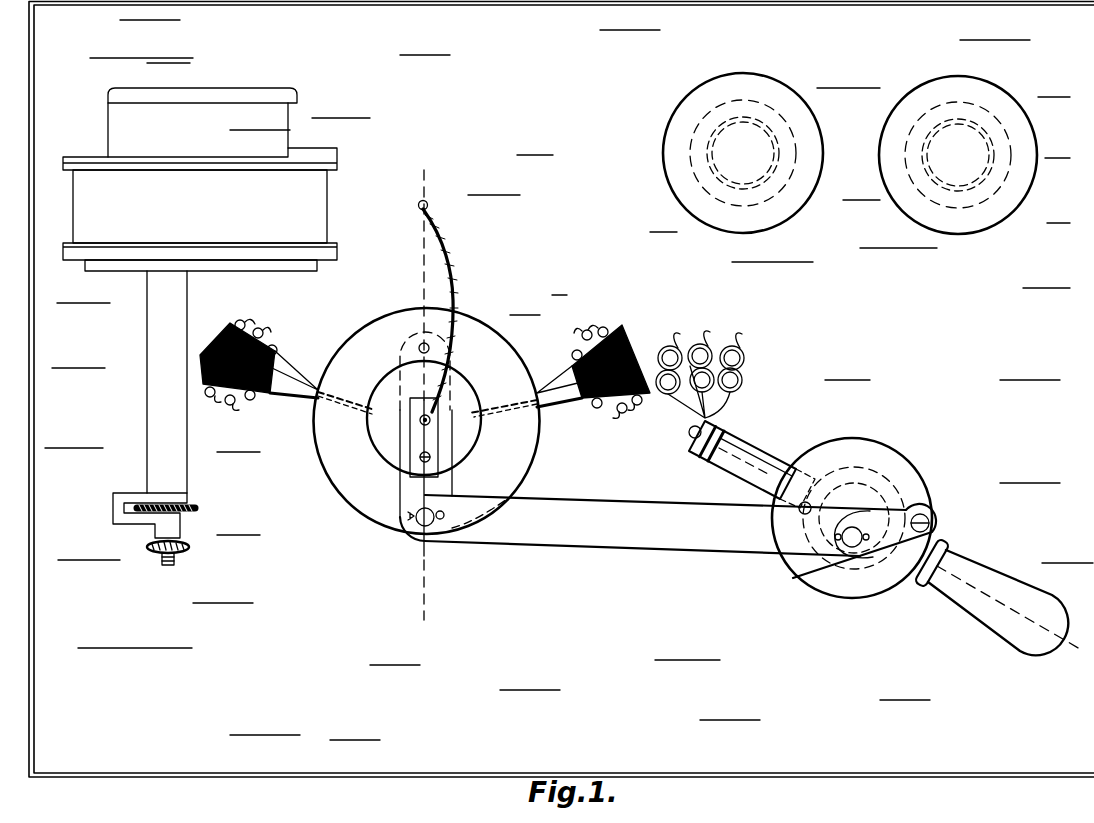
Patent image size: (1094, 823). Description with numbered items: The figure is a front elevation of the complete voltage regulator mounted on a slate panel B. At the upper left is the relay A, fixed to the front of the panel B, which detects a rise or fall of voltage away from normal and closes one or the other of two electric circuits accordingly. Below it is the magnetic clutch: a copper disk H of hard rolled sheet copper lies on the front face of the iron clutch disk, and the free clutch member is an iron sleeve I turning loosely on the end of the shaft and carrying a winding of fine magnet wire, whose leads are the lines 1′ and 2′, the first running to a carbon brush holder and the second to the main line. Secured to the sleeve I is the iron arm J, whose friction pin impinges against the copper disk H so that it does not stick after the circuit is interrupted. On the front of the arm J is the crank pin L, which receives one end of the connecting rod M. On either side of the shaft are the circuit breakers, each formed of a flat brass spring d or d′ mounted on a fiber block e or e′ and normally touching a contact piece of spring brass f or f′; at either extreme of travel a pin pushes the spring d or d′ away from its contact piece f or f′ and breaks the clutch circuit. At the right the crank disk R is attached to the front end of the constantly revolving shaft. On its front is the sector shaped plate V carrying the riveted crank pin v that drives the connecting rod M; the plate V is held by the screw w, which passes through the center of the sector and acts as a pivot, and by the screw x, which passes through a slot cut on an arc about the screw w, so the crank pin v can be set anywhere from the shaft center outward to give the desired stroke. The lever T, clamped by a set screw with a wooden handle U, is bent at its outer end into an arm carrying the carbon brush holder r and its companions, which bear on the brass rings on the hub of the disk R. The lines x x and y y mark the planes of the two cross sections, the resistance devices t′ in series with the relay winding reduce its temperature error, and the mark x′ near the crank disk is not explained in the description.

The relay A is at (325, 216).
The slate panel B is at (39, 380).
The copper disk H is at (533, 457).
The iron sleeve I is at (483, 440).
The arm J is at (453, 485).
The crank pin L is at (405, 531).
The connecting rod M is at (580, 543).
The screw x is at (850, 515).
The axis line x′ is at (808, 575).
The line 1′ is at (455, 304).
The line 2′ is at (452, 306).
The fiber block e is at (226, 348).
The contact piece f is at (297, 378).
The flat brass spring d is at (290, 404).
The fiber block e′ is at (630, 346).
The contact piece f′ is at (558, 380).
The flat brass spring d′ is at (556, 403).
The section line y y is at (689, 430).
The lever T is at (765, 447).
The carbon brush holder r is at (740, 477).
The crank disk R is at (924, 467).
The sector shaped plate V is at (880, 553).
The crank pin v is at (844, 533).
The screw w is at (931, 523).
The wooden handle U is at (972, 563).
The resistance device t′ is at (780, 226).